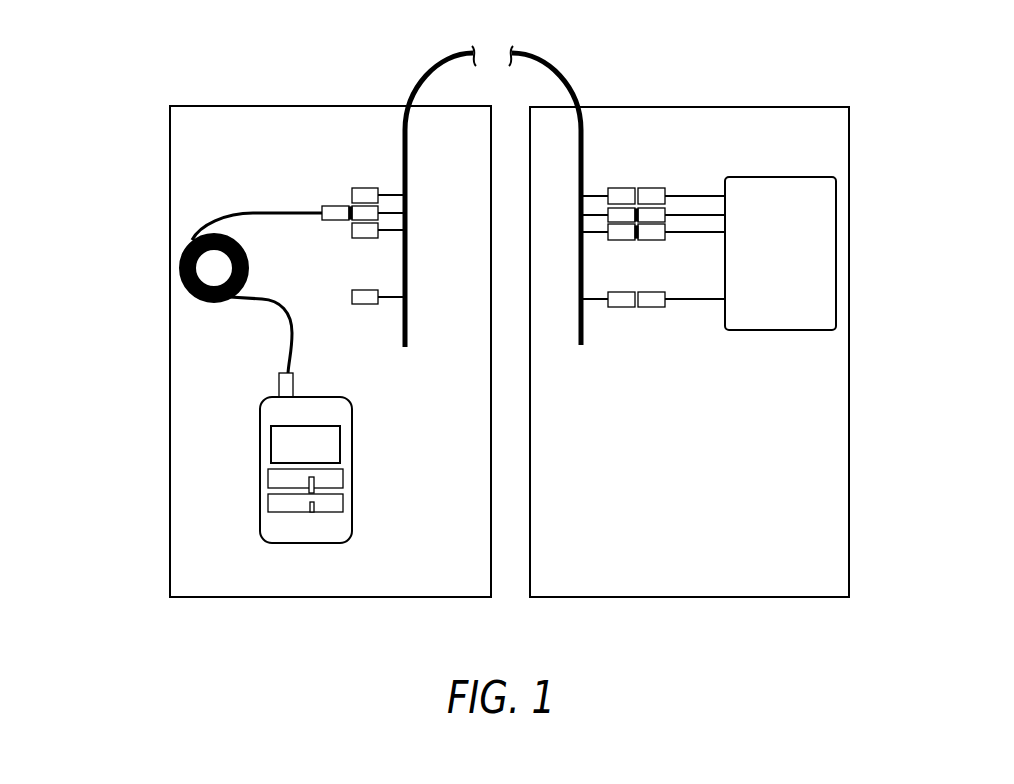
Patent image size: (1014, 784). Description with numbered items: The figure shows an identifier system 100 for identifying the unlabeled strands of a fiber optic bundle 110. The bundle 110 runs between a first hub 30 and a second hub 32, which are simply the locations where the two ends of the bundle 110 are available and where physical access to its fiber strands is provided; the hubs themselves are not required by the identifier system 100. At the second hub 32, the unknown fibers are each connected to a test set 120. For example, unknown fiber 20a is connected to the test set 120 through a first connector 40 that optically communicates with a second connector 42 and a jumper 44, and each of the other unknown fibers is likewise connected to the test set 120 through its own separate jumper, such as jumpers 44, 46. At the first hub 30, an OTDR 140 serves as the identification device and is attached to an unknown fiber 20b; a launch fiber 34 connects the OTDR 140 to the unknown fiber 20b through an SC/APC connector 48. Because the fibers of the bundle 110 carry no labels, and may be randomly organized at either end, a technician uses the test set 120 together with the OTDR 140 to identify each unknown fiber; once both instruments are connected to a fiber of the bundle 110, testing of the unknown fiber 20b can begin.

The identifier system 100 is at (124, 100).
The first hub 30 is at (205, 123).
The second hub 32 is at (822, 378).
The fiber optic bundle 110 is at (557, 61).
The unknown fiber 20b is at (393, 188).
The unknown fiber 20a is at (595, 195).
The SC/APC connector 48 is at (336, 220).
The launch fiber 34 is at (178, 268).
The OTDR 140 is at (340, 523).
The first connector 40 is at (620, 197).
The second connector 42 is at (653, 197).
The jumper 44 is at (692, 195).
The jumper 46 is at (692, 302).
The test set 120 is at (813, 215).